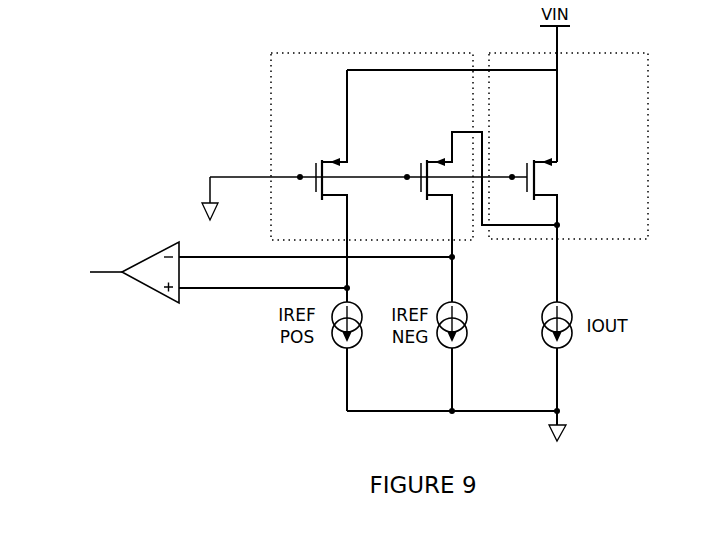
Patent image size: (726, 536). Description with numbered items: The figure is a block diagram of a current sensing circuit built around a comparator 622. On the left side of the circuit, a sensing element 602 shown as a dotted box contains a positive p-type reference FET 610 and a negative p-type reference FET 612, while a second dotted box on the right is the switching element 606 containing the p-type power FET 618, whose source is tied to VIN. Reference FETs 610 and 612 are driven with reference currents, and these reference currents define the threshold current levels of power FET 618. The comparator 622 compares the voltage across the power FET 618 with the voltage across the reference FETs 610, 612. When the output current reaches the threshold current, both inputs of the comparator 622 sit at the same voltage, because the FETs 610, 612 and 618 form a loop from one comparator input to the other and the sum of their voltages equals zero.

The sensing element 602 is at (271, 83).
The switching element 606 is at (633, 240).
The positive p-type reference FET 610 is at (322, 198).
The negative p-type reference FET 612 is at (427, 198).
The p-type power FET 618 is at (534, 159).
The comparator 622 is at (164, 245).